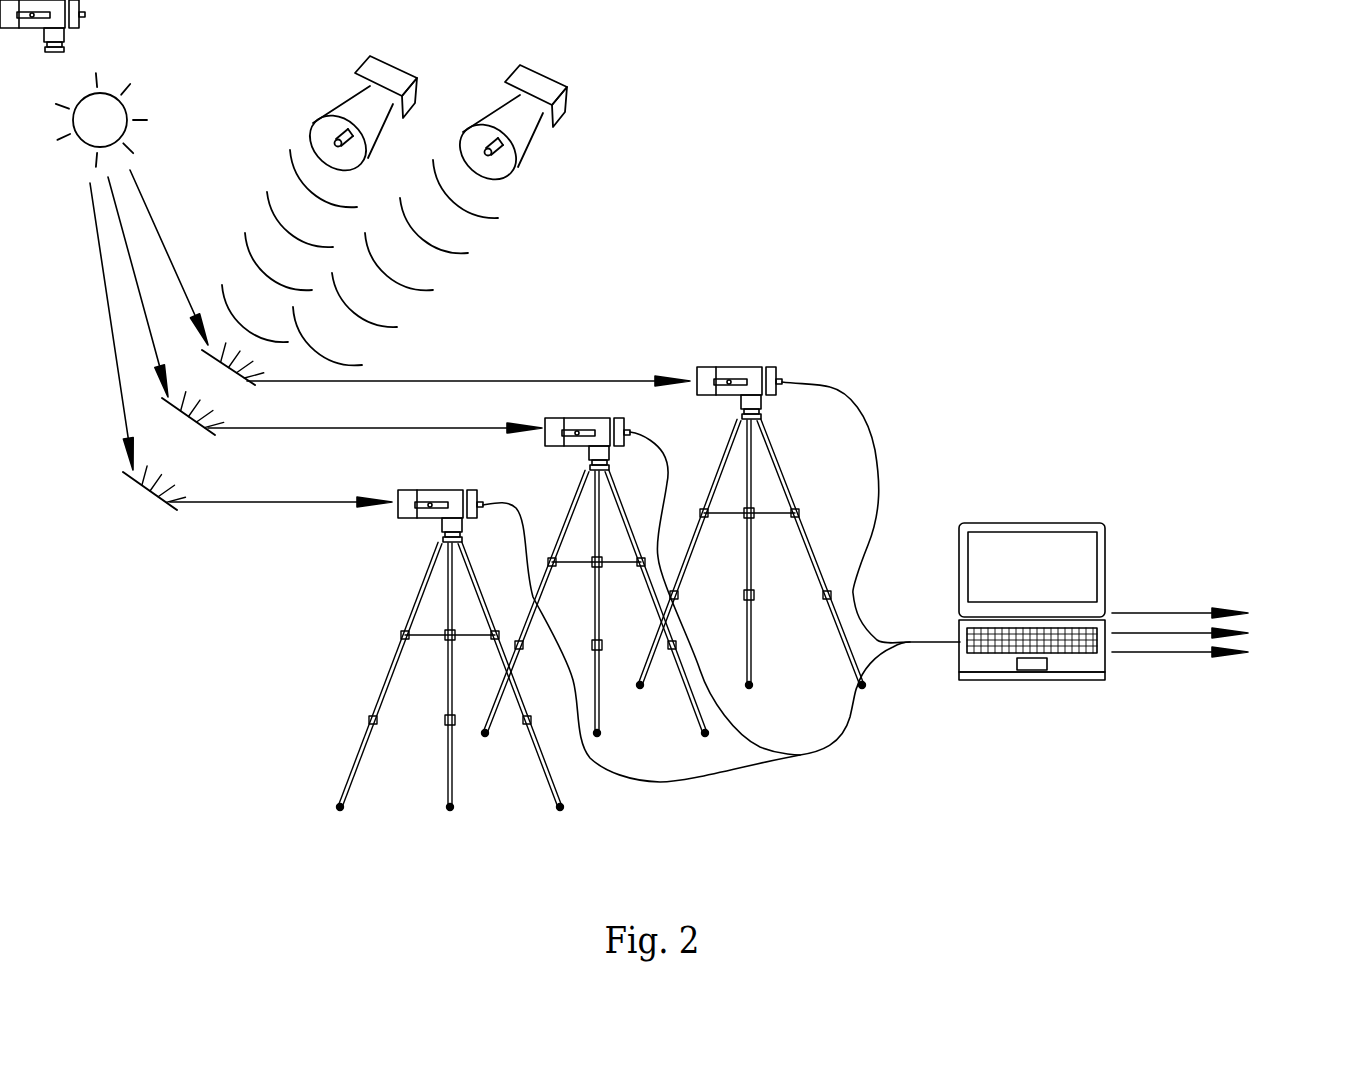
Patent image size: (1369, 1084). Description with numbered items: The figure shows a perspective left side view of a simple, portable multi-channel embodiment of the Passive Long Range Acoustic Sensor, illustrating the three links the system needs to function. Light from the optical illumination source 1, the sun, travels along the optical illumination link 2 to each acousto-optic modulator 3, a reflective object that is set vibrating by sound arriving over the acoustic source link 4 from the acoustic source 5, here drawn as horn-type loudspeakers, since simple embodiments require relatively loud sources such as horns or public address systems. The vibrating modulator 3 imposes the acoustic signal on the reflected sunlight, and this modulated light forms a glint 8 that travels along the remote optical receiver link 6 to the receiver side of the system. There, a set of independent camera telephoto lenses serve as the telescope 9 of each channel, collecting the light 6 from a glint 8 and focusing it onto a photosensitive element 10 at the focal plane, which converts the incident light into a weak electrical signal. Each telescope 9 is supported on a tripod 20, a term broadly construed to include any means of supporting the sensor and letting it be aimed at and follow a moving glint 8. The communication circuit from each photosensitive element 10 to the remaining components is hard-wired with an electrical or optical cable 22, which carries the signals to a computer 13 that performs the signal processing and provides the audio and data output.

The optical illumination source 1 is at (110, 112).
The optical illumination link 2 is at (78, 365).
The acousto-optic modulator 3 is at (125, 502).
The acoustic source link 4 is at (545, 247).
The acoustic source 5 is at (545, 85).
The remote optical receiver link 6 is at (276, 525).
The glint 8 is at (210, 486).
The telescope 9 is at (755, 367).
The photosensitive element 10 is at (785, 345).
The computer 13 is at (1037, 552).
The tripod 20 is at (345, 675).
The cable 22 is at (905, 392).